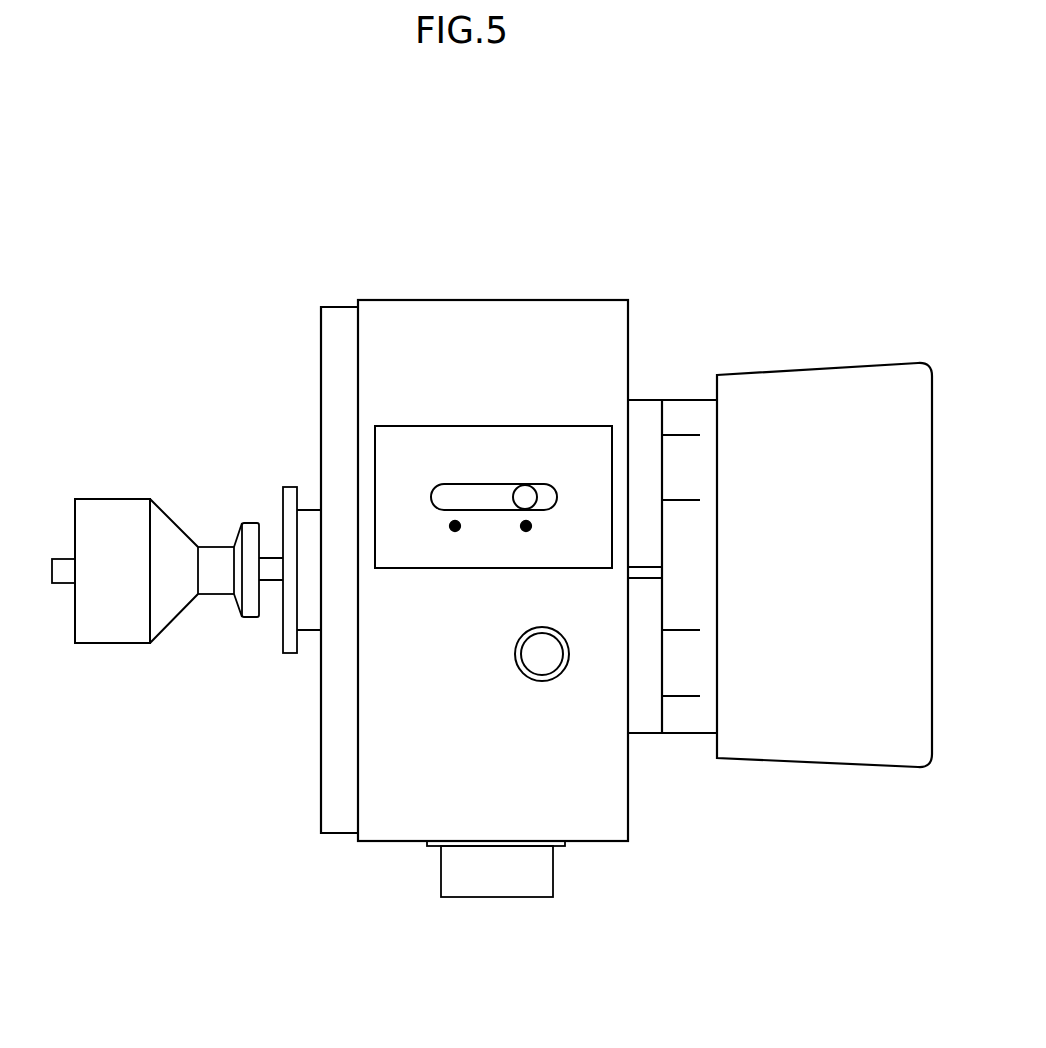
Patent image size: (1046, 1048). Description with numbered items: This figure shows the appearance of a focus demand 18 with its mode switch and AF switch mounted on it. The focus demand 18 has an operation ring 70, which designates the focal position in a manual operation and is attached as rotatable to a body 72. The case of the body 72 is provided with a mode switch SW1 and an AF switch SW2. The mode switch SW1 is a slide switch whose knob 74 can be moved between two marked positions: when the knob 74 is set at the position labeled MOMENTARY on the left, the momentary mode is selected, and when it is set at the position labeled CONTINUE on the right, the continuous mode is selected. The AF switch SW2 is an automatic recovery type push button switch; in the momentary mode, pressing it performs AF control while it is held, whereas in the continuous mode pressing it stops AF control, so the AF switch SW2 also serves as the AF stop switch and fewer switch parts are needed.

The focus demand 18 is at (580, 267).
The body 72 is at (408, 320).
The operation ring 70 is at (812, 393).
The mode switch SW1 is at (564, 480).
The AF switch SW2 is at (543, 660).
The knob 74 is at (523, 497).